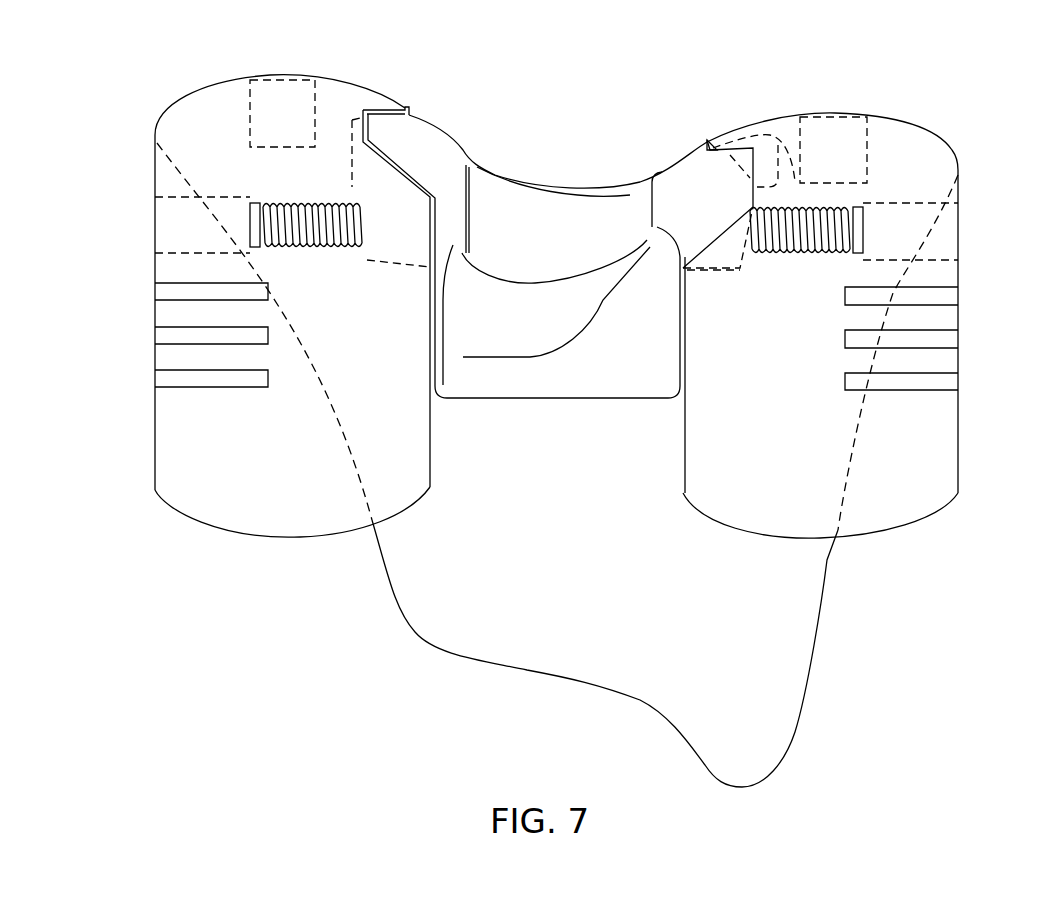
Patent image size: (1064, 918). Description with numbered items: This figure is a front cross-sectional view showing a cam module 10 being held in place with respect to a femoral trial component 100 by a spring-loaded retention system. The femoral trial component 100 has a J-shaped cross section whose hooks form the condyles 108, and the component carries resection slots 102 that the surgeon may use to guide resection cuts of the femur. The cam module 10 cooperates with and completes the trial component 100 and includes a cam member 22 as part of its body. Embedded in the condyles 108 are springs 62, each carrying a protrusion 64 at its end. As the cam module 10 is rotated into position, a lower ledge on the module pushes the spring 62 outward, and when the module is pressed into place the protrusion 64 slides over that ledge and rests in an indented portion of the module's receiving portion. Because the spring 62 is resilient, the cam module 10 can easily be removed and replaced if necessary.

The cam module 10 is at (422, 148).
The femoral trial component 100 is at (540, 150).
The protrusion 64 is at (708, 140).
The spring 62 is at (771, 128).
The resection slots 102 is at (172, 335).
The condyles 108 is at (900, 447).
The cam member 22 is at (573, 350).